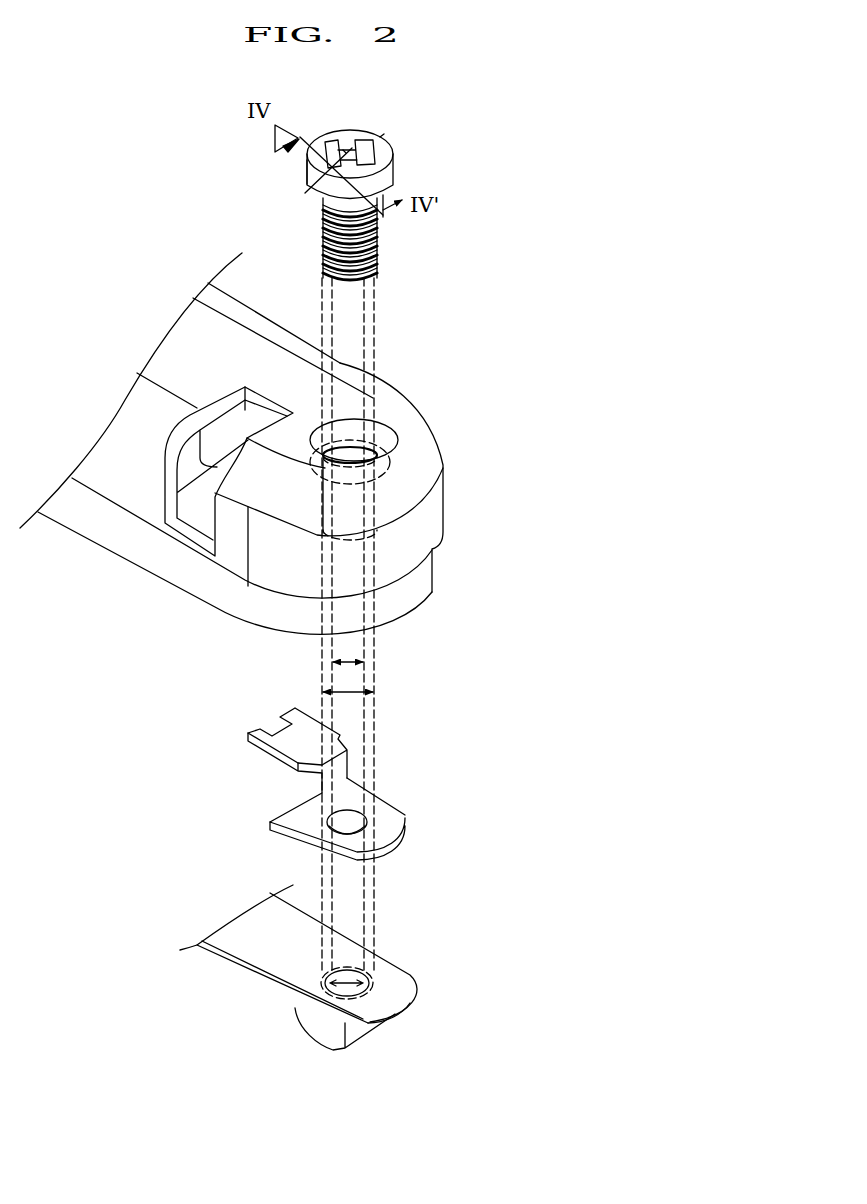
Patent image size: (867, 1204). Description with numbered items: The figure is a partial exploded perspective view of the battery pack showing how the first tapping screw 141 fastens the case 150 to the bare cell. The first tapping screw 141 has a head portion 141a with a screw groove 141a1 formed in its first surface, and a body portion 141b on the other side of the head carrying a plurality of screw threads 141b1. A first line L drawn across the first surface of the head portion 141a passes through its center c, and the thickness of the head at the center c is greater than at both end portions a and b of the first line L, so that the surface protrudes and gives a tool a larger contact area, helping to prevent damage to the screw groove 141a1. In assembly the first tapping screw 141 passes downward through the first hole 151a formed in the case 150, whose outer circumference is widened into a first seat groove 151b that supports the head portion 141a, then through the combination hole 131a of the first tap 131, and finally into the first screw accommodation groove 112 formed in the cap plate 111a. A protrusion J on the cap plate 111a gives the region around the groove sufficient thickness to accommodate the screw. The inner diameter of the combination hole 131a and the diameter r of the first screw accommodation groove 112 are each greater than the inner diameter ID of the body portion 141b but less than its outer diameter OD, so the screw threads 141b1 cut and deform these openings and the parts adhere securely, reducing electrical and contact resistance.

The first tapping screw 141 is at (381, 205).
The head portion 141a is at (396, 164).
The screw groove 141a1 is at (368, 160).
The body portion 141b is at (352, 239).
The screw threads 141b1 is at (323, 237).
The case 150 is at (286, 443).
The first hole 151a is at (360, 517).
The first seat groove 151b is at (388, 445).
The first tap 131 is at (308, 784).
The combination hole 131a is at (368, 823).
The cap plate 111a is at (316, 980).
The first screw accommodation groove 112 is at (357, 975).
The protrusion J is at (308, 1025).
The first line L is at (300, 185).
The end portion of the first line a is at (317, 172).
The end portion of the first line b is at (380, 137).
The center of the head portion c is at (343, 150).
The inner diameter ID is at (367, 663).
The outer diameter OD is at (366, 693).
The diameter of the first screw accommodation groove r is at (346, 981).